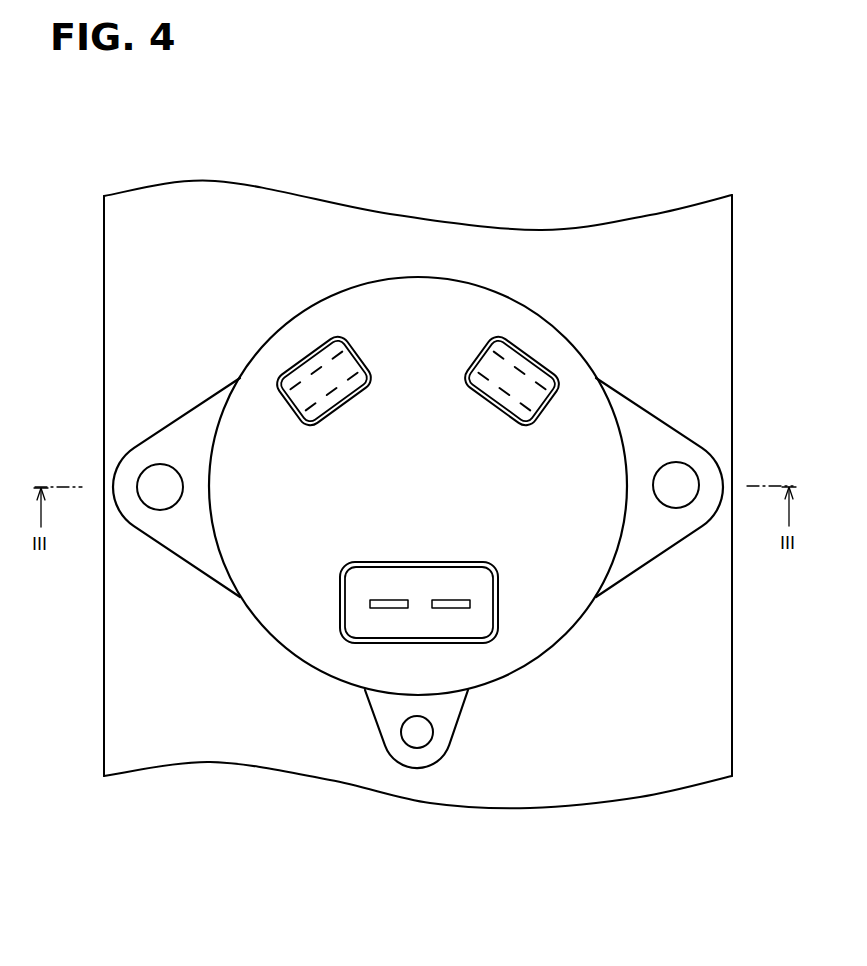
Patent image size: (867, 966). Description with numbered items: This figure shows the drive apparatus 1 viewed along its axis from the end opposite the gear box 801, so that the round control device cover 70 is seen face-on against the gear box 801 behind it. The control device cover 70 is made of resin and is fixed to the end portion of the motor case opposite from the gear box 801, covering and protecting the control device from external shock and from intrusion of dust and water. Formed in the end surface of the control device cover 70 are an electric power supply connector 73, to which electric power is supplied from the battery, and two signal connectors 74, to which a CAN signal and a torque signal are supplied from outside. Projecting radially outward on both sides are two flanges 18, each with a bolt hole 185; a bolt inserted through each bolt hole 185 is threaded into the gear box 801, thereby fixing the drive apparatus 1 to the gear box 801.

The drive apparatus 1 is at (389, 476).
The flange 18 is at (389, 573).
The bolt hole 185 is at (174, 508).
The control device cover 70 is at (430, 295).
The electric power supply connector 73 is at (398, 562).
The signal connector 74 is at (348, 418).
The gear box 801 is at (690, 703).